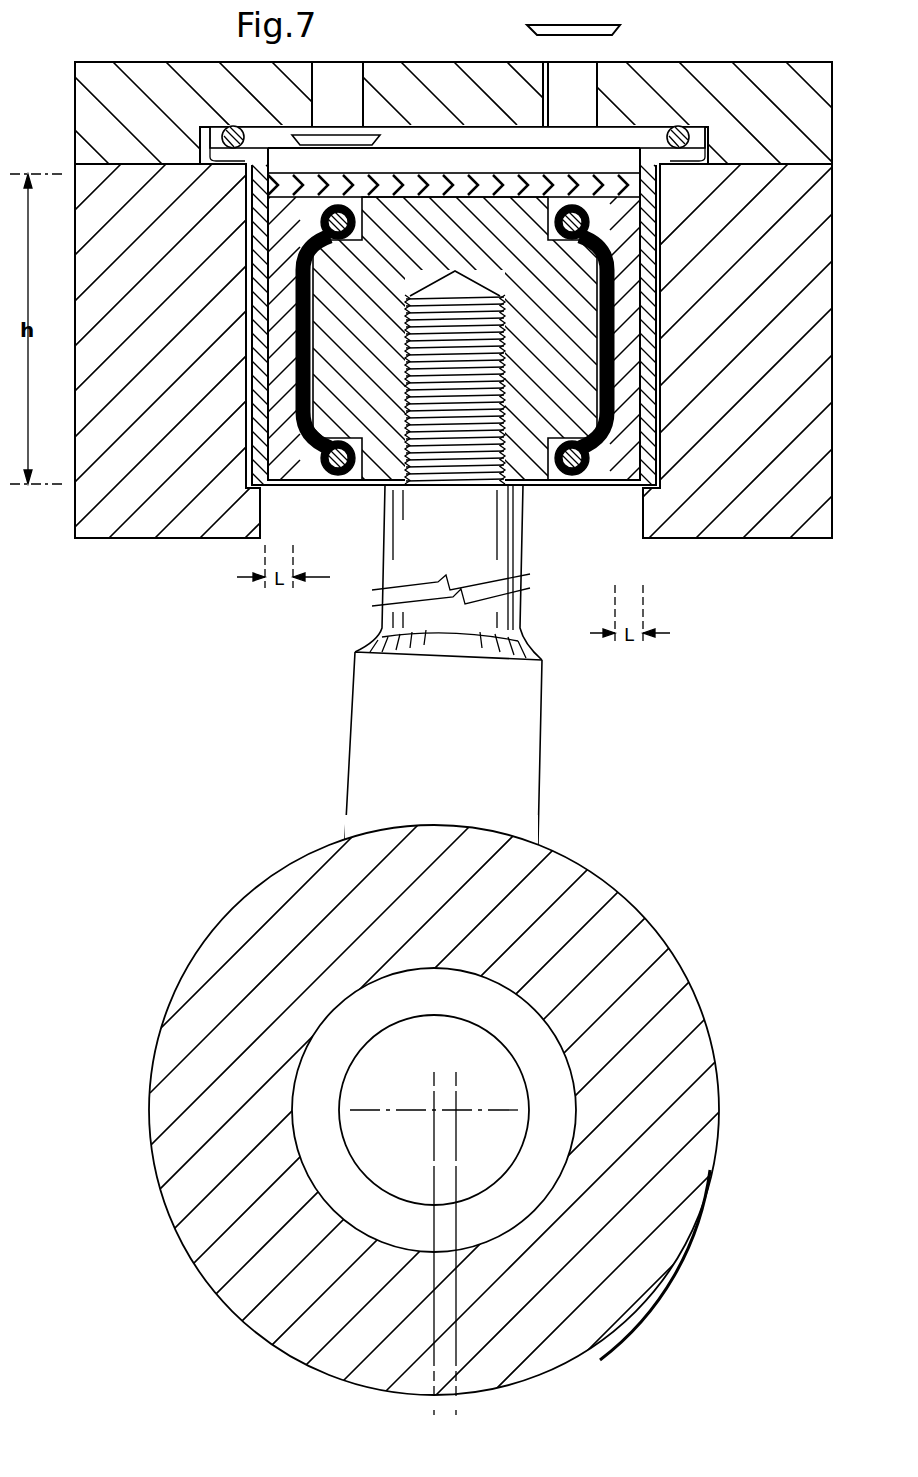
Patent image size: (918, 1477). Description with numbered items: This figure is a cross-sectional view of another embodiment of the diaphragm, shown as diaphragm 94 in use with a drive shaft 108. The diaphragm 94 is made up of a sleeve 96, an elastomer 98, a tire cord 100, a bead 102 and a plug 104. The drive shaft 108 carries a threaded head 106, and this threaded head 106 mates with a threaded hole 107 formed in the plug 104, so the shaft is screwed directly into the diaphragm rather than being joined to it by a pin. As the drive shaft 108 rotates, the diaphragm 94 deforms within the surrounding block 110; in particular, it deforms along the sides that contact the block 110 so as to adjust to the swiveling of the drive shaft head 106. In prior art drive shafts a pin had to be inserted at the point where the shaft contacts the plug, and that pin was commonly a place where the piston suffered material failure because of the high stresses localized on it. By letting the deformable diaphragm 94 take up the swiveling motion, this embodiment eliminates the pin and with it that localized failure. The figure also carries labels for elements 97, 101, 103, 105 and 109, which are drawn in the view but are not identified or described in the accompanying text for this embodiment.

The diaphragm 94 is at (618, 505).
The sleeve 96 is at (695, 123).
The O-ring 97 is at (235, 125).
The elastomer 98 is at (610, 197).
The tire cord 100 is at (297, 360).
The housing 101 is at (103, 75).
The bead 102 is at (300, 222).
The ring 103 is at (358, 70).
The plug 104 is at (377, 485).
The slot 105 is at (546, 62).
The threaded head 106 is at (477, 485).
The threaded hole 107 is at (475, 140).
The drive shaft 108 is at (542, 720).
The backing plate 109 is at (455, 173).
The block 110 is at (82, 507).